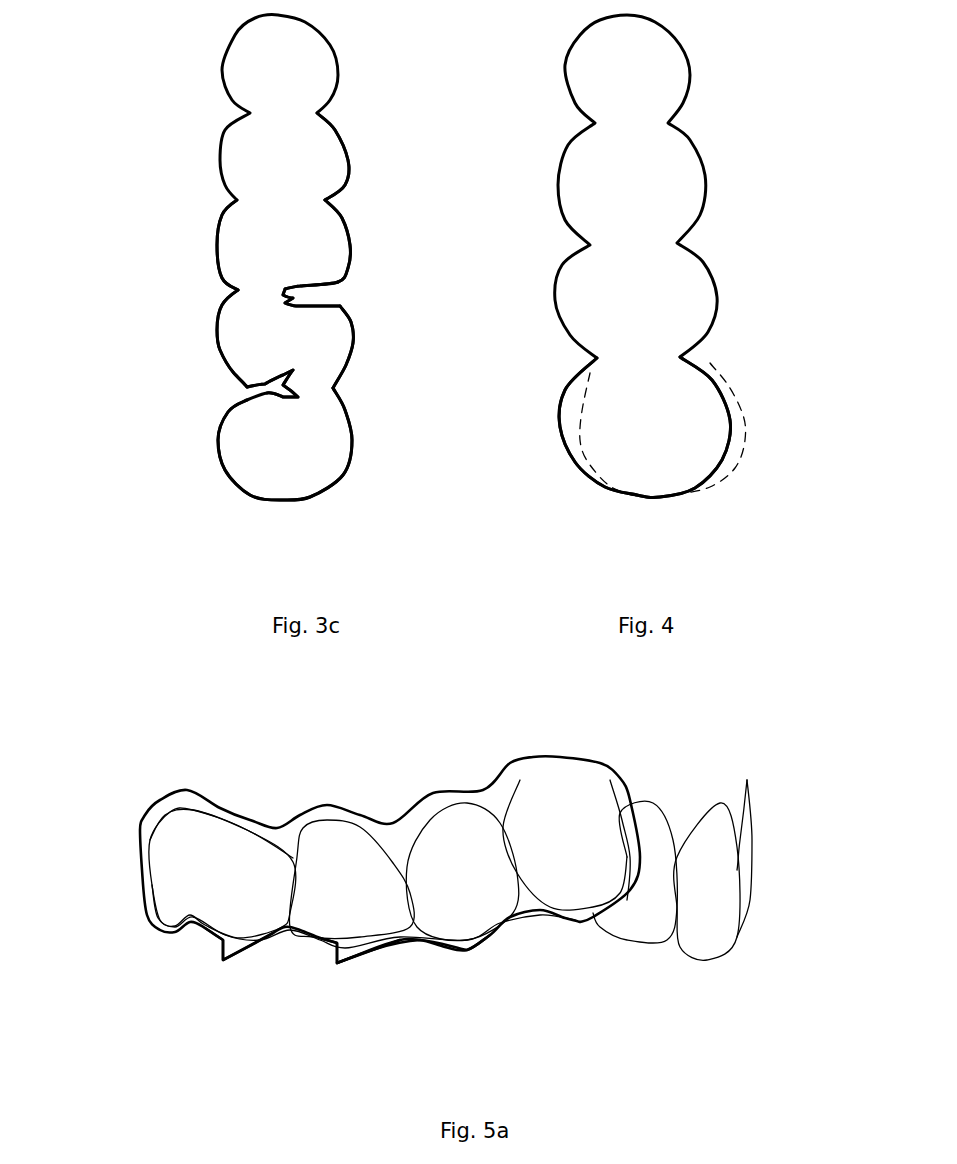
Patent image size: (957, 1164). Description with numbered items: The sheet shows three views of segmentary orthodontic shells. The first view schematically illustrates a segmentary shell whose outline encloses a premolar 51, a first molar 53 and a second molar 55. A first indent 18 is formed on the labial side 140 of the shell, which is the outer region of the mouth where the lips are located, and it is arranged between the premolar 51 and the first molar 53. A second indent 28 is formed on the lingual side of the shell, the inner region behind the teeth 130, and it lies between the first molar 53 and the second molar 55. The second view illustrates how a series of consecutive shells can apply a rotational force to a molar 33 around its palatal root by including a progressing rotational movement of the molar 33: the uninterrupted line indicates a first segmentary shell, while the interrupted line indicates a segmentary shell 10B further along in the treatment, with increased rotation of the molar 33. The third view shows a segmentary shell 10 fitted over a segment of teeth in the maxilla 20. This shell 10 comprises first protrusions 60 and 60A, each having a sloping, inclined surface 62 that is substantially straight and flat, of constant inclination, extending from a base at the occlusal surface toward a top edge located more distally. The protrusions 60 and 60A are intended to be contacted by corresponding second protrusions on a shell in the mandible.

In FIG. 3C, the teeth 130 is at (247, 257).
In FIG. 3C, the labial side 140 is at (373, 155).
In FIG. 3C, the premolar 51 is at (263, 239).
In FIG. 3C, the first molar 53 is at (263, 340).
In FIG. 3C, the second molar 55 is at (280, 463).
In FIG. 3C, the first indent 18 is at (320, 295).
In FIG. 3C, the second indent 28 is at (247, 388).
In FIG. 4, the segmentary shell 10 is at (713, 280).
In FIG. 5A, the segmentary shell 10 is at (143, 881).
In FIG. 4, the segmentary shell further along in the treatment 10B is at (727, 473).
In FIG. 4, the molar 33 is at (643, 420).
In FIG. 5A, the maxilla 20 is at (763, 865).
In FIG. 5A, the first protrusion 60 is at (240, 942).
In FIG. 5A, the first protrusion 60A is at (357, 950).
In FIG. 5A, the sloping surface 62 is at (400, 957).